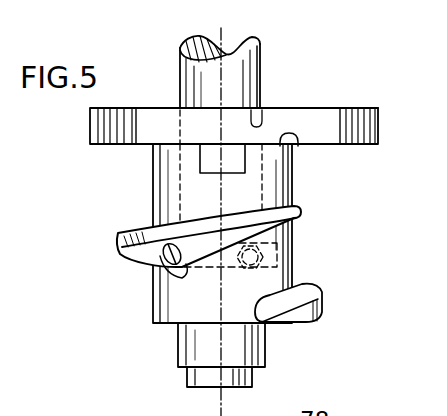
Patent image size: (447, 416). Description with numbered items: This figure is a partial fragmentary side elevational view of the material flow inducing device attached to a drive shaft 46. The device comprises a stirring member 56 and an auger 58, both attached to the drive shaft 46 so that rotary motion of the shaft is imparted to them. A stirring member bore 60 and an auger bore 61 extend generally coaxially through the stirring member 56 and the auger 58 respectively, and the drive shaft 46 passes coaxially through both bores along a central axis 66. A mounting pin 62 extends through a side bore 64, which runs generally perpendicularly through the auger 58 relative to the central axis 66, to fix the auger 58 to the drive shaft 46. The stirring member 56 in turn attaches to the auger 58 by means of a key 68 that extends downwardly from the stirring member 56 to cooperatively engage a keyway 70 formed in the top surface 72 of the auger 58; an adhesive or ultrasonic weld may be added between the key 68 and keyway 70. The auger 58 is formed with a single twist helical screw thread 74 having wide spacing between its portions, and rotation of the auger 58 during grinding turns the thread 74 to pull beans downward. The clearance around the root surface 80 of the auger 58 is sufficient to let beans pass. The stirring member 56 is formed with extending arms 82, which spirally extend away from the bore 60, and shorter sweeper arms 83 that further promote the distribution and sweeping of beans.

The drive shaft 46 is at (195, 87).
The stirring member 56 is at (378, 120).
The auger member 58 is at (297, 238).
The stirring member bore 60 is at (257, 96).
The auger bore 61 is at (298, 275).
The mounting pin 62 is at (152, 262).
The side bore 64 is at (177, 279).
The central axis 66 is at (238, 345).
The key 68 is at (244, 160).
The keyway 70 is at (234, 173).
The top surface 72 is at (296, 140).
The single twist helical screw thread 74 is at (117, 237).
The root surface 80 is at (288, 183).
The extending arms 82 is at (309, 122).
The sweeper arms 83 is at (355, 105).